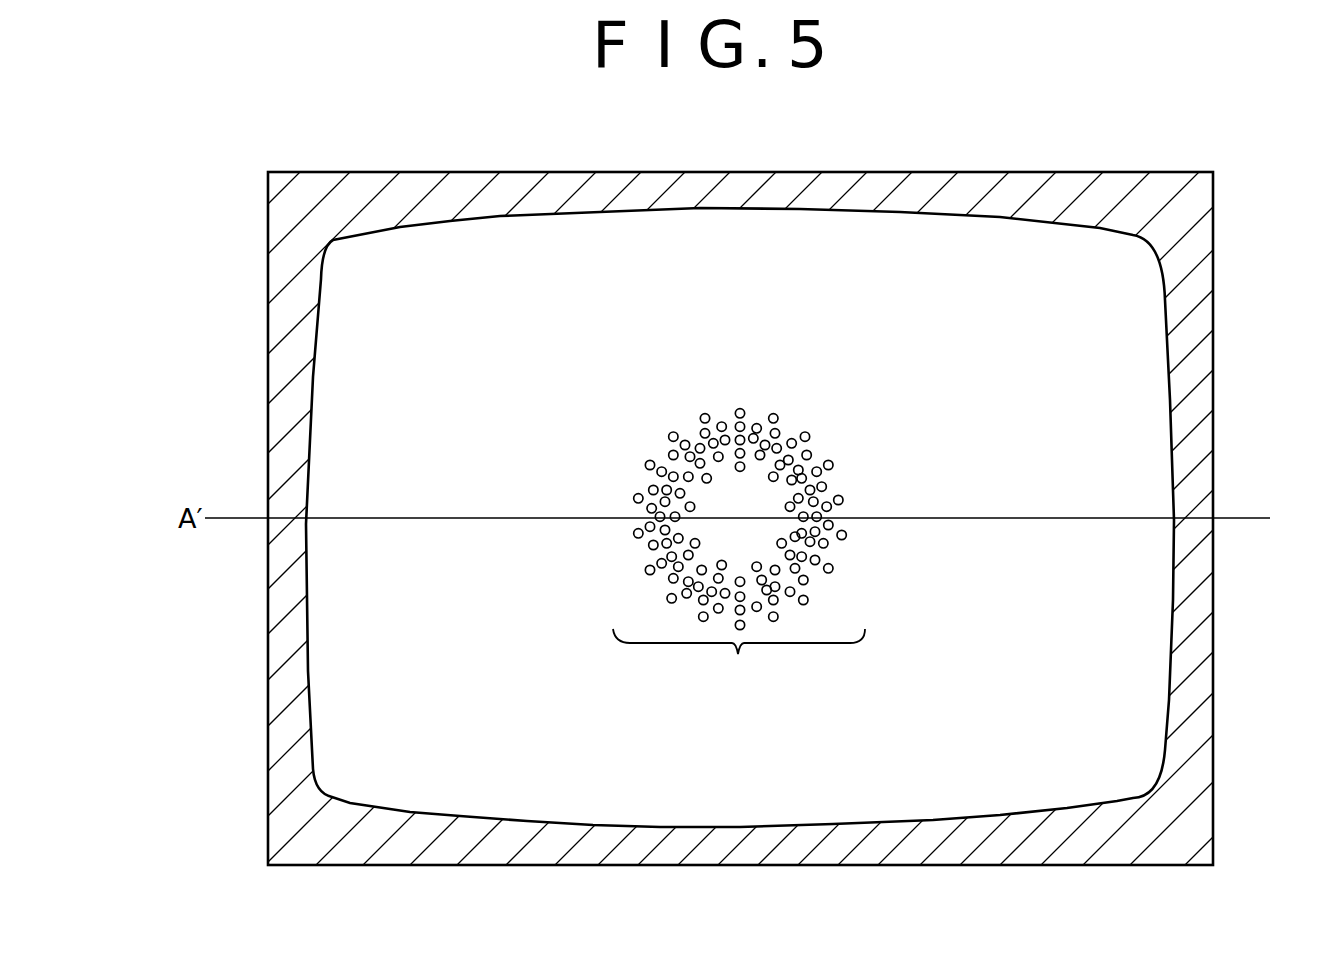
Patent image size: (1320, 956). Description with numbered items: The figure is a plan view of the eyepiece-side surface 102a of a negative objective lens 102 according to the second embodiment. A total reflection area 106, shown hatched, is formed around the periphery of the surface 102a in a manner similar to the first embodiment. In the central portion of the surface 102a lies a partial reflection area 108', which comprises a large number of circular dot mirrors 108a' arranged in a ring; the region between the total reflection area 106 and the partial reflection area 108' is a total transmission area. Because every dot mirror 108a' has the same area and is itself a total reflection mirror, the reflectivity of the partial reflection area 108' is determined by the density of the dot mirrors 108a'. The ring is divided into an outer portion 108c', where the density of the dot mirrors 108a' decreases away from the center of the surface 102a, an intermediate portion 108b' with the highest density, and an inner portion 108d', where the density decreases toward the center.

The negative objective lens 102 is at (258, 663).
The eyepiece-side surface 102a is at (1140, 297).
The total reflection area 106 is at (1096, 197).
The partial reflection area 108' is at (740, 463).
The circular dot mirrors 108a' is at (739, 662).
The intermediate portion 108b' is at (617, 400).
The outer portion 108c' is at (625, 366).
The inner portion 108d' is at (617, 439).